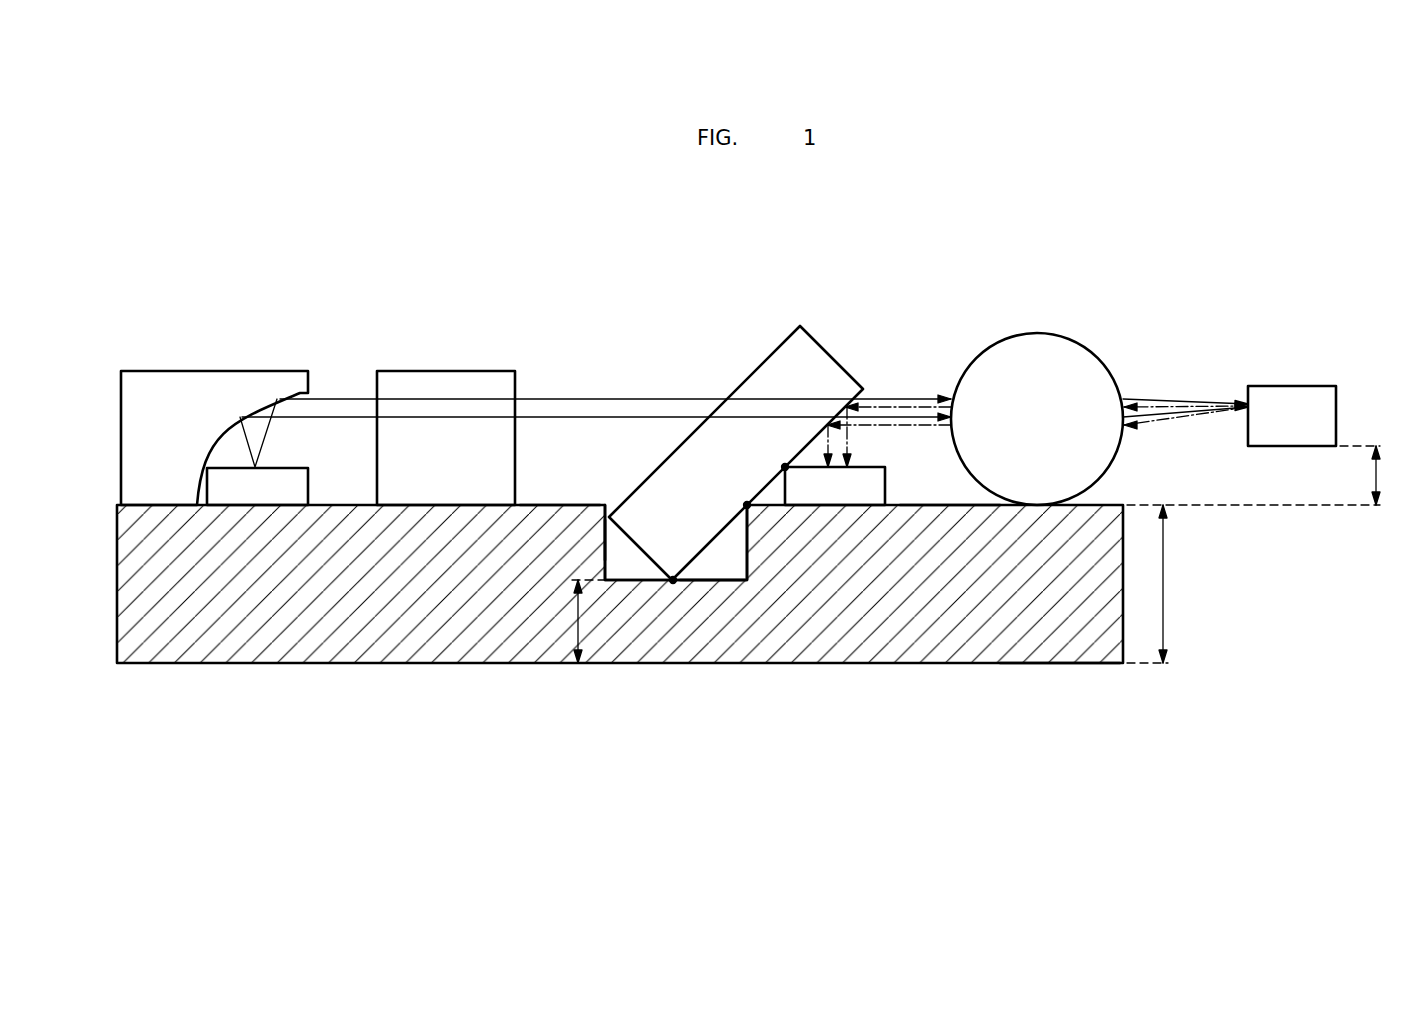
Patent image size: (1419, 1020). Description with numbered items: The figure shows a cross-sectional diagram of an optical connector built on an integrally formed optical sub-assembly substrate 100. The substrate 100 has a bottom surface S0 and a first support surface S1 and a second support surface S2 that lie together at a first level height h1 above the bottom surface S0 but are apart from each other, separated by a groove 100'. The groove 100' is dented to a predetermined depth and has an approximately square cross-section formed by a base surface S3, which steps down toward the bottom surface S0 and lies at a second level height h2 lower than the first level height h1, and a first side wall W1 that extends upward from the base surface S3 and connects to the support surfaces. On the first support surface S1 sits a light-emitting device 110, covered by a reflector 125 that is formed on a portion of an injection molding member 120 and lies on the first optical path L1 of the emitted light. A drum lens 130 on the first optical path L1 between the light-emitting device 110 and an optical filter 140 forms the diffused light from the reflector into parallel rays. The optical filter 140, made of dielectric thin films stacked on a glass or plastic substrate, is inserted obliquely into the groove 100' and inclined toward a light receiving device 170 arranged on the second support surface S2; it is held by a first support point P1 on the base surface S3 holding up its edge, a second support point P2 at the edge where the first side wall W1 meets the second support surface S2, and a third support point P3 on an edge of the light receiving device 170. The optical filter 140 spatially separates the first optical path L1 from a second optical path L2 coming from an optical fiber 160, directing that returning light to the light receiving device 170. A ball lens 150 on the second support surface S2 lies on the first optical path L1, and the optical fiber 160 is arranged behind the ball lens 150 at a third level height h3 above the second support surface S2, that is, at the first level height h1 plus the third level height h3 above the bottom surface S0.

The optical sub-assembly (OSA) substrate 100 is at (752, 515).
The light-emitting device 110 is at (257, 498).
The groove 100' is at (669, 621).
The injection molding member 120 is at (207, 380).
The reflector 125 is at (281, 397).
The drum lens 130 is at (447, 377).
The optical filter 140 is at (740, 385).
The ball lens 150 is at (1037, 345).
The optical fiber 160 is at (1293, 395).
The light receiving device 170 is at (868, 495).
The first optical path L1 is at (590, 410).
The second optical path L2 is at (878, 423).
The first side wall W1 is at (606, 545).
The bottom surface S0 is at (1075, 667).
The first support surface S1 is at (541, 481).
The second support surface S2 is at (936, 504).
The base surface S3 is at (714, 567).
The first support point P1 is at (673, 584).
The second support point P2 is at (747, 508).
The third support point P3 is at (785, 470).
The first level height h1 is at (1253, 584).
The second level height h2 is at (576, 621).
The third level height h3 is at (1373, 475).